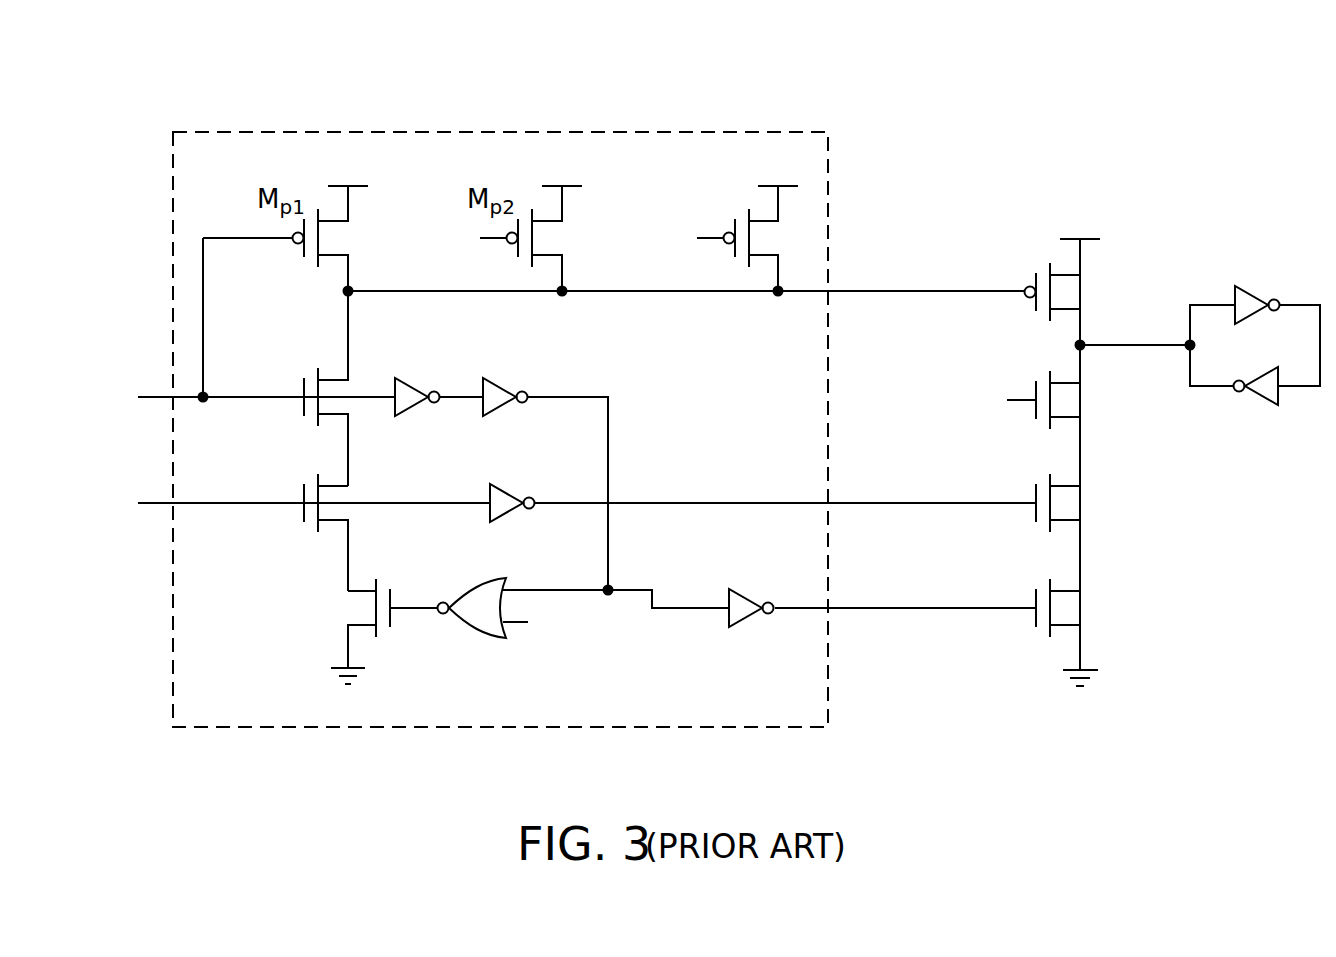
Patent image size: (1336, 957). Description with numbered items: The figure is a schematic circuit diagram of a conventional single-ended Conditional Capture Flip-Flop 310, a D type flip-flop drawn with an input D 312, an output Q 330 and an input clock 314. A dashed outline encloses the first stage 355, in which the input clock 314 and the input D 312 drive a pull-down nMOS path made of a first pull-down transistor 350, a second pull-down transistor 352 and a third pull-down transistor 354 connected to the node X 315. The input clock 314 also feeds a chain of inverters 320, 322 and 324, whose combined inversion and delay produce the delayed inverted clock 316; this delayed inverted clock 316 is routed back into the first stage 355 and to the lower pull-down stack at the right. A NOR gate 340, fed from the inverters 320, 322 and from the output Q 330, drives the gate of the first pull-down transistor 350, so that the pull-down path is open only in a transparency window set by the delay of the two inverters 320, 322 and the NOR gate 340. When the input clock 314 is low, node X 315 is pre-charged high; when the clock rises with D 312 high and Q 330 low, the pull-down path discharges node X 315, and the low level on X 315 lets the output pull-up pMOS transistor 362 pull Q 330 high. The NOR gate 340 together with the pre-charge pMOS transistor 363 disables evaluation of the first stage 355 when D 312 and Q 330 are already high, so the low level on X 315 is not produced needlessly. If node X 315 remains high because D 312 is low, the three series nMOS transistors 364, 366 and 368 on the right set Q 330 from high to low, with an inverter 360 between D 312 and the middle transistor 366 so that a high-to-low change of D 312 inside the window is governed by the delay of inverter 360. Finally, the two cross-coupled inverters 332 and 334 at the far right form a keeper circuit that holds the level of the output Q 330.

The flip-flop circuit 310 is at (1040, 73).
The first stage 355 is at (343, 130).
The transistor Mn3 354 is at (290, 340).
The transistor Mn2 352 is at (282, 446).
The transistor Mn1 350 is at (400, 556).
The NOR gate 340 is at (477, 640).
The output Q 330 is at (1122, 322).
The inverter 320 is at (424, 385).
The inverter 322 is at (510, 385).
The inverter 360 is at (517, 490).
The inverter 324 is at (755, 590).
The CLK3 316 is at (440, 222).
The clock CLK0 314 is at (100, 378).
The input D 312 is at (677, 220).
The node X 315 is at (876, 267).
The transistor Mp3 363 is at (712, 188).
The transistor Mp4 362 is at (1010, 250).
The transistor Mn6 368 is at (998, 448).
The transistor Mn5 366 is at (1000, 558).
The transistor Mn4 364 is at (1000, 663).
The inverter 332 is at (1262, 297).
The inverter 334 is at (1256, 378).